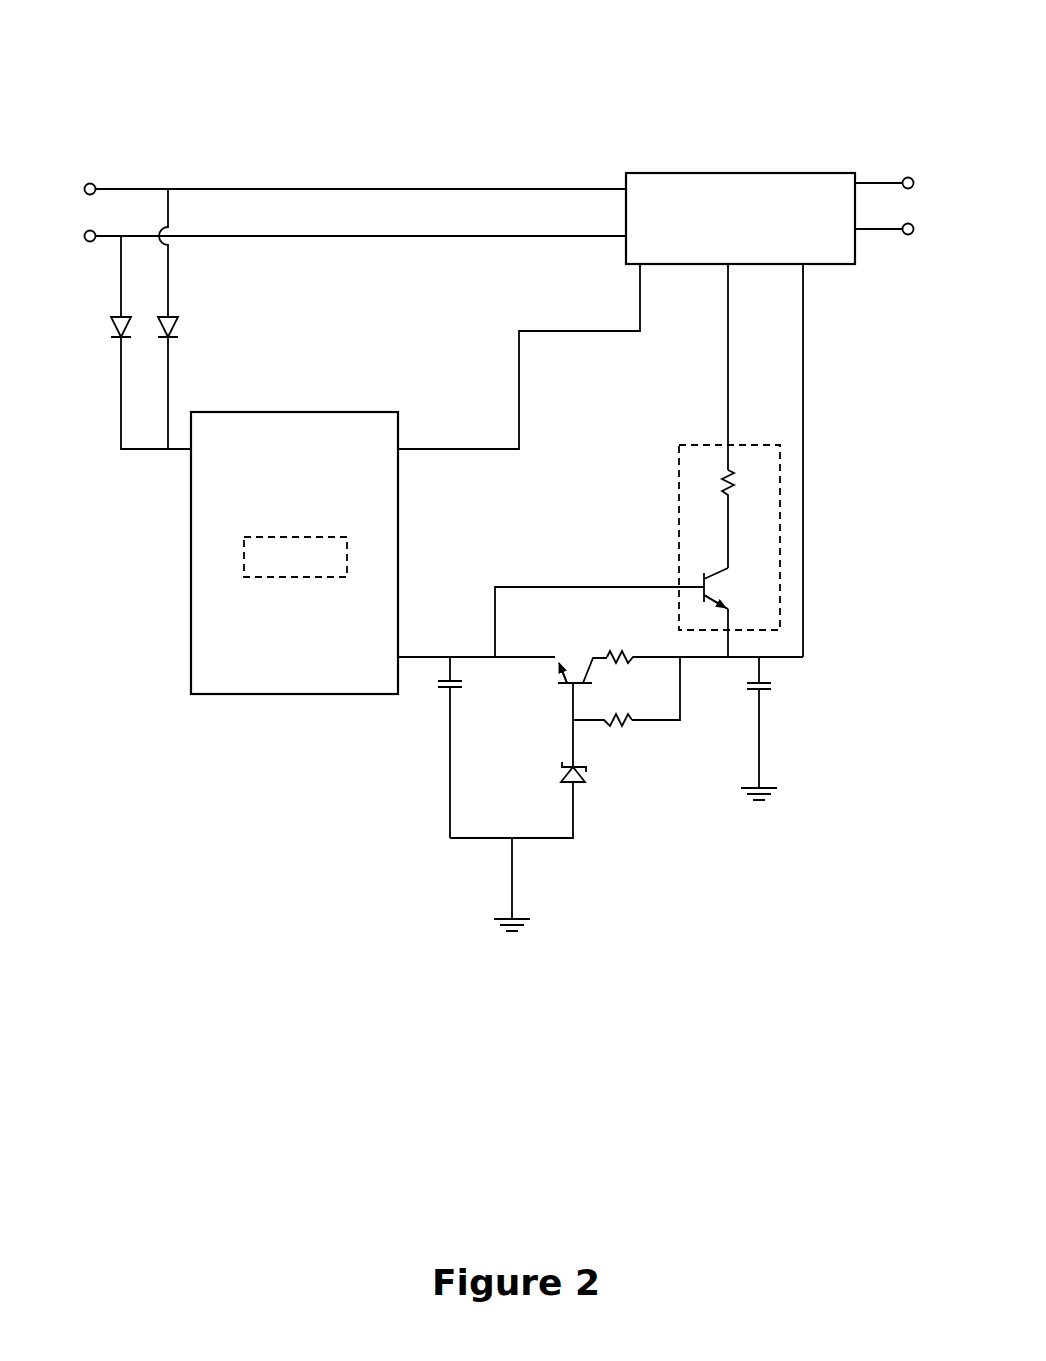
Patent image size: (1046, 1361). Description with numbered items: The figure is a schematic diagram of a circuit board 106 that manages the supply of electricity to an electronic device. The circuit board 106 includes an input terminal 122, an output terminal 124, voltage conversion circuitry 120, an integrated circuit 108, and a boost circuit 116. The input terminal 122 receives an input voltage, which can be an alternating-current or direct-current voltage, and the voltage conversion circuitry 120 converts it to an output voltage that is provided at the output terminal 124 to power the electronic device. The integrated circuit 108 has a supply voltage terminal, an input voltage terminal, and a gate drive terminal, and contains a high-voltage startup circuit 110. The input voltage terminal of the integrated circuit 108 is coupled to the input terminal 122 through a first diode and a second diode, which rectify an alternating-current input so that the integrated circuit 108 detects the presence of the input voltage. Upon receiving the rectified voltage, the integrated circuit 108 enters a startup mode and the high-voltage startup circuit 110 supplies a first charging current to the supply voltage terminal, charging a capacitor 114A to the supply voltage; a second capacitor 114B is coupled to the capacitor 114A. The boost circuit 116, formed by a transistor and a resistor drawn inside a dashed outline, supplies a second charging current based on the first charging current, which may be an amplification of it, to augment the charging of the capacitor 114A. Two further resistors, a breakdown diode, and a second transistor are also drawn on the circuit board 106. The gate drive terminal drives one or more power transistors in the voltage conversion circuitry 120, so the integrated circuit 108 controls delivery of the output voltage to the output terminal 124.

The circuit board 106 is at (608, 86).
The integrated circuit 108 is at (312, 412).
The high-voltage startup circuit 110 is at (288, 580).
The capacitor 114A is at (455, 690).
The capacitor 114B is at (765, 690).
The boost circuit 116 is at (679, 523).
The voltage conversion circuitry 120 is at (822, 173).
The input terminal 122 is at (122, 174).
The output terminal 124 is at (874, 162).